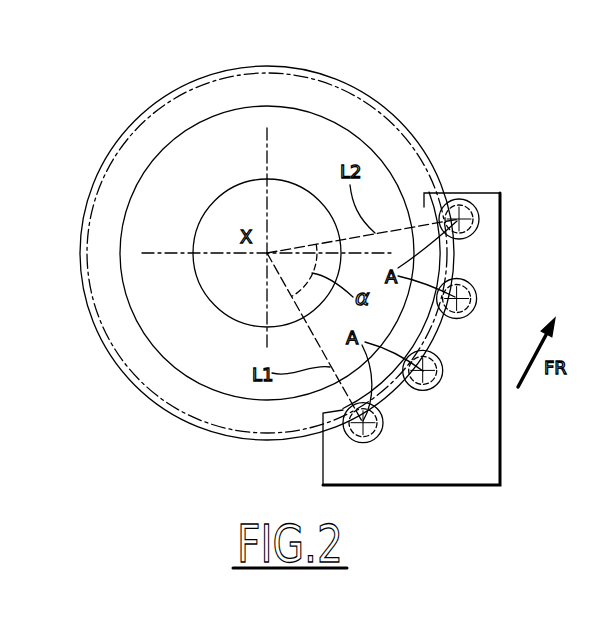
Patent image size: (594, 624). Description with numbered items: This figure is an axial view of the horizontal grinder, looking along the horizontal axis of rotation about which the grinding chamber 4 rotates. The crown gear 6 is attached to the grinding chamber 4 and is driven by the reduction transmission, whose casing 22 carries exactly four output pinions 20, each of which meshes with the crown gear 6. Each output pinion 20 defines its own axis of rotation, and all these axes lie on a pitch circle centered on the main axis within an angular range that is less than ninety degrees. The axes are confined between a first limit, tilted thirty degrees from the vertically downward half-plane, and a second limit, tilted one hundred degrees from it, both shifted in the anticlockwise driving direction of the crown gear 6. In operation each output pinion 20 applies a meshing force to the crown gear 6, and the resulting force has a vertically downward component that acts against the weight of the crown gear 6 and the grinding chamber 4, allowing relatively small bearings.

The grinding chamber 4 is at (298, 122).
The crown gear 6 is at (368, 125).
The output pinions 20 is at (462, 283).
The casing 22 is at (475, 487).